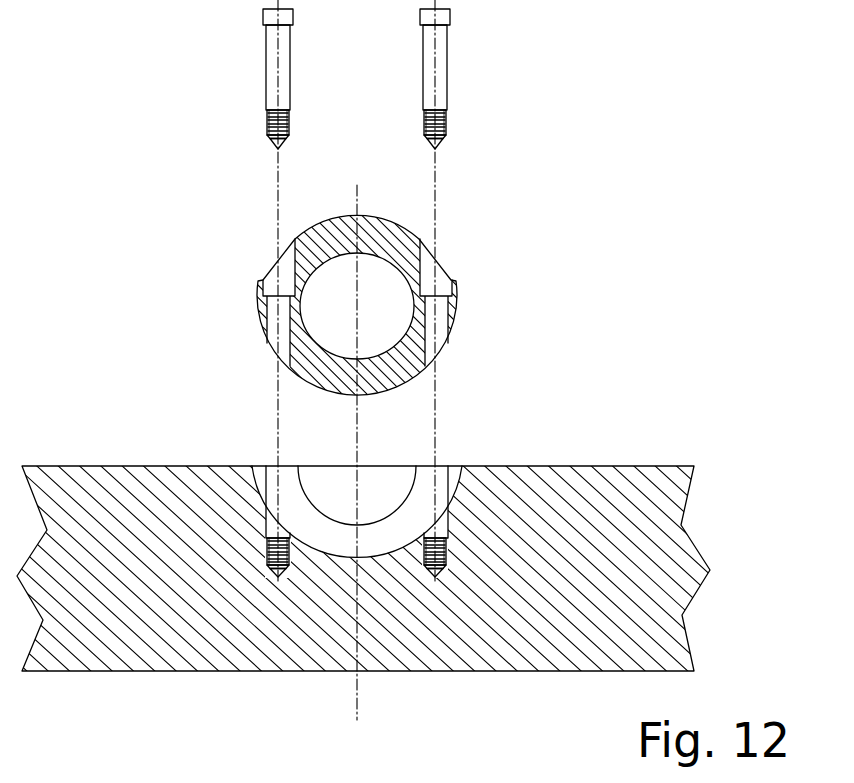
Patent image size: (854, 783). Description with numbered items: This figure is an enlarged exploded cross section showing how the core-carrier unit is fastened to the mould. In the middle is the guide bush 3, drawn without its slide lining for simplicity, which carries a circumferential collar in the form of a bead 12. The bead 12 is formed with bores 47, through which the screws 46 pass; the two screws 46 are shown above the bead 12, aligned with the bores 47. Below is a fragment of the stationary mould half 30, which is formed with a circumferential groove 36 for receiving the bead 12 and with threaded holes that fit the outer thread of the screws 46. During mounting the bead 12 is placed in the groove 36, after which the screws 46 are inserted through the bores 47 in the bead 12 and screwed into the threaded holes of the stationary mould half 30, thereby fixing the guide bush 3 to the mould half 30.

The guide bush 3 is at (352, 279).
The bead 12 is at (458, 310).
The screws 46 is at (268, 77).
The bores 47 is at (268, 313).
The groove 36 is at (289, 465).
The stationary mould half 30 is at (564, 465).